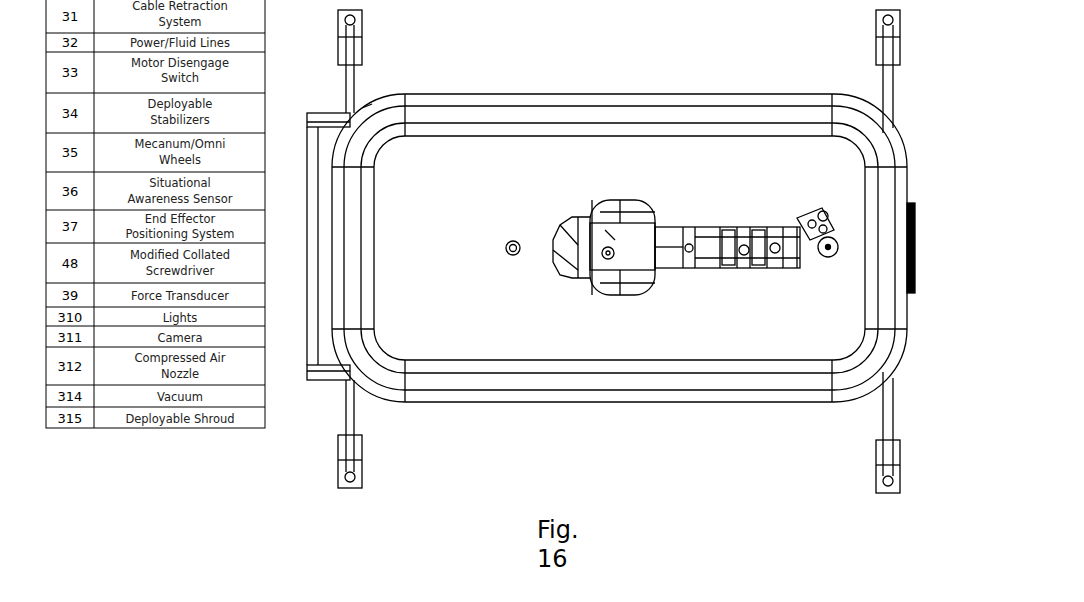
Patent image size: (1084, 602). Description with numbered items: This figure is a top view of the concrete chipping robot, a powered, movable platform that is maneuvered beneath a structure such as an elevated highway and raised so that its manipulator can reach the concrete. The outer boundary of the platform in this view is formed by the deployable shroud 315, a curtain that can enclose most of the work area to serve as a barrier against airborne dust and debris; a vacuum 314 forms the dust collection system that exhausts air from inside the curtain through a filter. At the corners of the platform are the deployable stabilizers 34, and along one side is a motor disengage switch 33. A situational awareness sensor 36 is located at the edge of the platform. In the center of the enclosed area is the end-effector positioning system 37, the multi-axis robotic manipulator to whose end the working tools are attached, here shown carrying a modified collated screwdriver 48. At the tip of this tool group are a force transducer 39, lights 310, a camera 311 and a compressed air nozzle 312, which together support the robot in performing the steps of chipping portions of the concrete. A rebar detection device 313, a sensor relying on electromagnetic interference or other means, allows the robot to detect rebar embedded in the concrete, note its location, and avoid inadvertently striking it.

The motor disengage switch 33 is at (307, 127).
The deployable stabilizers 34 is at (340, 425).
The situational awareness sensor 36 is at (915, 205).
The end-effector positioning system 37 is at (592, 212).
The modified collated screwdriver 48 is at (803, 262).
The force transducer 39 is at (830, 225).
The lights 310 is at (819, 212).
The camera 311 is at (801, 218).
The compressed air nozzle 312 is at (787, 228).
The rebar detection device 313 is at (508, 242).
The vacuum 314 is at (362, 108).
The deployable shroud 315 is at (619, 248).